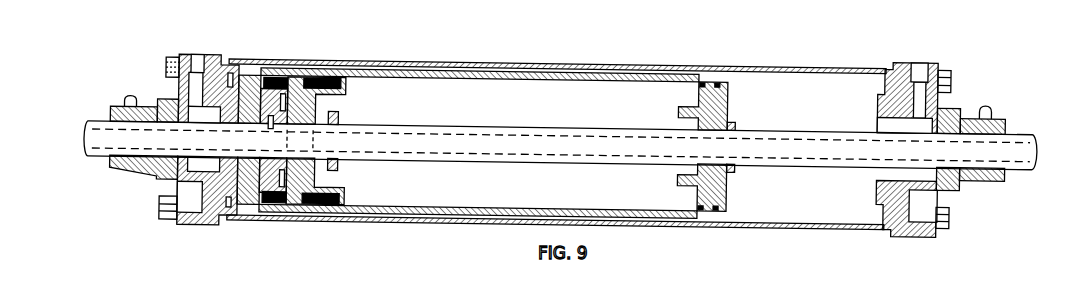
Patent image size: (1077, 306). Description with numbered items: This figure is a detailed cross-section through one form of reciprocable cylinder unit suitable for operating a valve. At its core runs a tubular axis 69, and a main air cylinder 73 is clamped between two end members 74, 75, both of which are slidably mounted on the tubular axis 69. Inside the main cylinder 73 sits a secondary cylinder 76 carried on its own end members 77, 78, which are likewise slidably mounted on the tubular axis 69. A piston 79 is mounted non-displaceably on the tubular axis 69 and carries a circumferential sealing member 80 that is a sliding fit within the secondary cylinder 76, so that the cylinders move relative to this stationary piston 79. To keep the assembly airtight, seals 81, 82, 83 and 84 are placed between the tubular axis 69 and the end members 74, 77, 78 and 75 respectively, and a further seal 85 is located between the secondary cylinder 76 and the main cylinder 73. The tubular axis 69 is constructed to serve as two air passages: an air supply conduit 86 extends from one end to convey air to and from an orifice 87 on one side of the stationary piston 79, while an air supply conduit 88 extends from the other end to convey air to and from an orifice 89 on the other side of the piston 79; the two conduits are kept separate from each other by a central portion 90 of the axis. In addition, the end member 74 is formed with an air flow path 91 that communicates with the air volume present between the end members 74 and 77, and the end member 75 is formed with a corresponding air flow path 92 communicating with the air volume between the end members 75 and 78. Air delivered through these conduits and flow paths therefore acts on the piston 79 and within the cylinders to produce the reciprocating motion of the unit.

The tubular axis 69 is at (599, 122).
The main air cylinder 73 is at (524, 59).
The end member 74 is at (221, 55).
The end member 75 is at (900, 53).
The secondary cylinder 76 is at (568, 205).
The end member 77 is at (178, 190).
The end member 78 is at (733, 190).
The piston 79 is at (333, 101).
The circumferential sealing member 80 is at (315, 203).
The seal 81 is at (189, 119).
The seal 82 is at (226, 166).
The seal 83 is at (736, 118).
The seal 84 is at (925, 117).
The seal 85 is at (250, 220).
The air supply conduit 86 is at (1040, 140).
The orifice 87 is at (340, 118).
The air supply conduit 88 is at (86, 141).
The orifice 89 is at (270, 128).
The central portion 90 is at (300, 140).
The air flow path 91 is at (195, 62).
The air flow path 92 is at (921, 56).